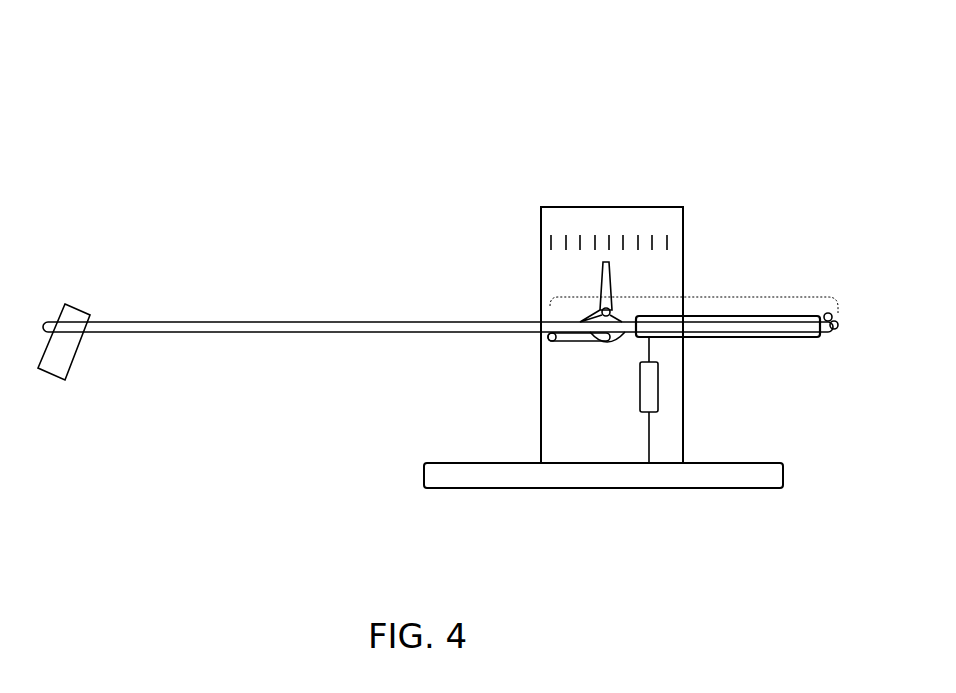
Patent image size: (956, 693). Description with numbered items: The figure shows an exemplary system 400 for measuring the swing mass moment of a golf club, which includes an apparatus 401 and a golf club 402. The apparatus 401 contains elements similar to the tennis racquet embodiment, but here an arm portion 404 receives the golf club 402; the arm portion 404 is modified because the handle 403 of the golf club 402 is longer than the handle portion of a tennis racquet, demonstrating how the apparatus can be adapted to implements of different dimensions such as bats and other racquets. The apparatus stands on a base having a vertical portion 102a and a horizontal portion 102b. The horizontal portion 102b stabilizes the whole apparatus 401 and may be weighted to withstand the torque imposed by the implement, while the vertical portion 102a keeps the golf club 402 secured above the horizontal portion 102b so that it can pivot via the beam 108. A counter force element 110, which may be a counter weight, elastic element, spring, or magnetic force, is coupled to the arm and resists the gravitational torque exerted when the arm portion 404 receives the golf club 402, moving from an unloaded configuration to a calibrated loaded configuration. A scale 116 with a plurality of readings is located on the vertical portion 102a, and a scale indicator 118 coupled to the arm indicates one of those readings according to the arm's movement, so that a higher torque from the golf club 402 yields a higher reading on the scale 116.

The system 400 is at (148, 92).
The golf club 402 is at (124, 320).
The handle 403 is at (760, 336).
The arm portion 404 is at (690, 296).
The apparatus 401 is at (847, 200).
The scale 116 is at (673, 226).
The scale indicator 118 is at (605, 262).
The beam 108 is at (562, 343).
The counter force element 110 is at (658, 388).
The vertical portion 102a is at (541, 428).
The horizontal portion 102b is at (618, 488).